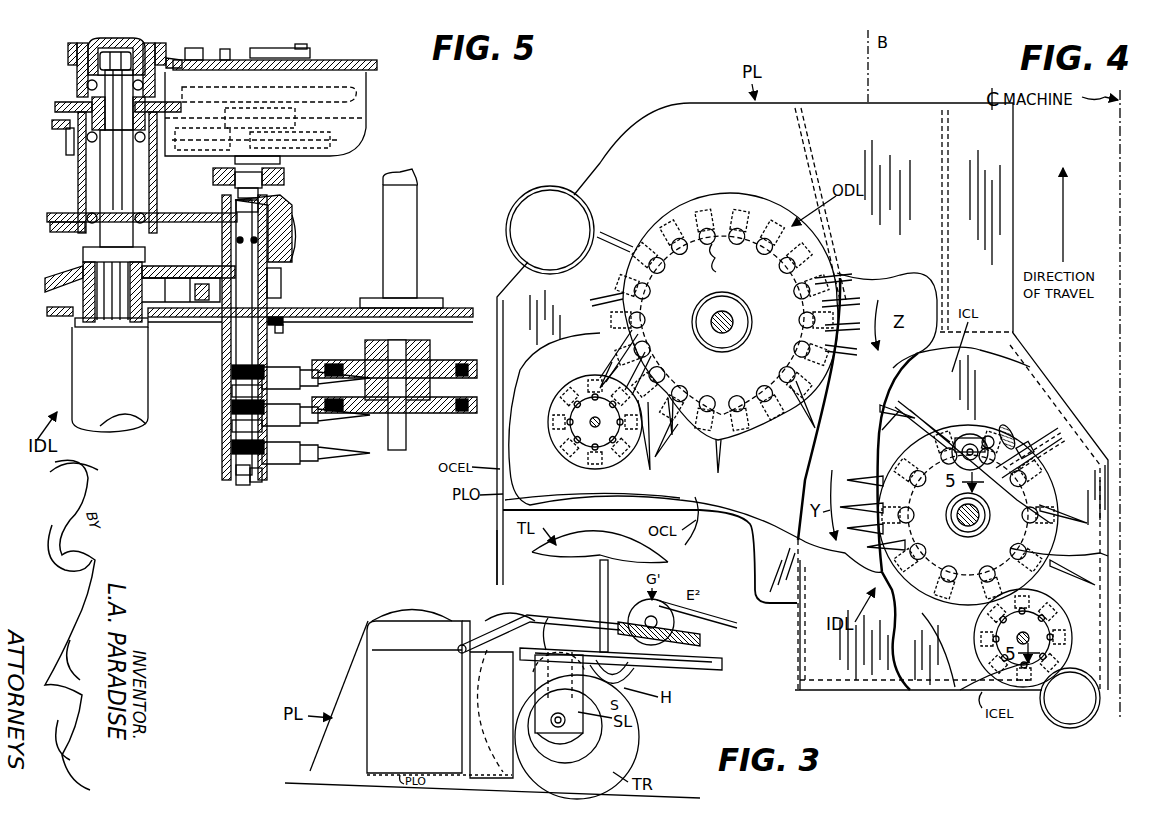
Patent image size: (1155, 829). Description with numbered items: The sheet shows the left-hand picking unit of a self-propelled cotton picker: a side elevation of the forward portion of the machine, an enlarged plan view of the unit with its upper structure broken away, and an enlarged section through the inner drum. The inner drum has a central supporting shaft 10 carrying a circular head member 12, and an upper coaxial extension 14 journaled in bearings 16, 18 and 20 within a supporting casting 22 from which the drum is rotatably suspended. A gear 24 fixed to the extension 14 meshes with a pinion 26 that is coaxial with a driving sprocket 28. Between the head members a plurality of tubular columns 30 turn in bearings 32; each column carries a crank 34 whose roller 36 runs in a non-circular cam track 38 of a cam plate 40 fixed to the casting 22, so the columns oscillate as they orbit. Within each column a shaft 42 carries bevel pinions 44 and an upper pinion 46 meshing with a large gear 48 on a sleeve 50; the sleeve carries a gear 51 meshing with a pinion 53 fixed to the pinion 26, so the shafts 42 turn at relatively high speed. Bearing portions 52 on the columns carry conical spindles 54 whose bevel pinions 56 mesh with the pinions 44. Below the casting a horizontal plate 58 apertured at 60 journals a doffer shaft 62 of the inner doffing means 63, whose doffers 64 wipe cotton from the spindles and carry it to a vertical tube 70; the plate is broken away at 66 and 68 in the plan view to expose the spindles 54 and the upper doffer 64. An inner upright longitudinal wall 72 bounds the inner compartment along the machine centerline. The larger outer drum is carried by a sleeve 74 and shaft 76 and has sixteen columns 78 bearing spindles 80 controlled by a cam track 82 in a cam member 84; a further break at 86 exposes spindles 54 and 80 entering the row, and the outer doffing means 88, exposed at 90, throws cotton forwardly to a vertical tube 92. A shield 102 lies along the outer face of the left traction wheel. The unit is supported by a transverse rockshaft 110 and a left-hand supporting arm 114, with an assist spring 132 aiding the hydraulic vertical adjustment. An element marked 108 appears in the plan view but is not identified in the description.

In FIG. 5, the central supporting shaft 10 is at (137, 397).
In FIG. 5, the circular head member 12 is at (62, 284).
In FIG. 5, the upper coaxial extension 14 is at (100, 181).
In FIG. 4, the upper coaxial extension 14 is at (958, 507).
In FIG. 5, the bearing 16 is at (87, 85).
In FIG. 5, the bearing 18 is at (66, 145).
In FIG. 5, the bearing 20 is at (72, 213).
In FIG. 5, the supporting housing or casting 22 is at (206, 62).
In FIG. 3, the supporting housing or casting 22 is at (412, 628).
In FIG. 5, the gear 24 is at (60, 104).
In FIG. 5, the pinion 26 is at (367, 119).
In FIG. 5, the driving sprocket 28 is at (350, 93).
In FIG. 5, the tubular columns 30 is at (222, 357).
In FIG. 4, the tubular columns 30 is at (962, 430).
In FIG. 5, the bearing 32 is at (278, 290).
In FIG. 5, the crank 34 is at (292, 217).
In FIG. 4, the crank 34 is at (975, 435).
In FIG. 5, the roller 36 is at (240, 185).
In FIG. 4, the roller 36 is at (990, 435).
In FIG. 5, the cam track 38 is at (284, 176).
In FIG. 4, the cam track 38 is at (1012, 430).
In FIG. 5, the cam member or plate 40 is at (213, 175).
In FIG. 4, the cam member or plate 40 is at (1026, 444).
In FIG. 5, the shaft 42 is at (238, 478).
In FIG. 5, the small bevel pinions 44 is at (230, 430).
In FIG. 5, the small pinion 46 is at (292, 238).
In FIG. 4, the small pinion 46 is at (1007, 424).
In FIG. 5, the large gear 48 is at (218, 235).
In FIG. 4, the large gear 48 is at (1036, 440).
In FIG. 5, the sleeve 50 is at (78, 162).
In FIG. 4, the sleeve 50 is at (988, 505).
In FIG. 5, the gear 51 is at (52, 125).
In FIG. 5, the bearing portions 52 is at (268, 370).
In FIG. 5, the pinion 53 is at (340, 146).
In FIG. 5, the picking spindle 54 is at (334, 462).
In FIG. 4, the picking spindle 54 is at (870, 478).
In FIG. 5, the small bevel pinion 56 is at (254, 478).
In FIG. 5, the horizontal plate 58 is at (335, 302).
In FIG. 4, the horizontal plate 58 is at (1020, 370).
In FIG. 5, the aperture 60 is at (276, 328).
In FIG. 5, the doffer shaft 62 is at (418, 178).
In FIG. 4, the doffer shaft 62 is at (1030, 638).
In FIG. 5, the inner doffing means 63 is at (428, 405).
In FIG. 4, the inner doffing means 63 is at (1065, 618).
In FIG. 5, the doffing members 64 is at (458, 370).
In FIG. 4, the doffing members 64 is at (975, 692).
In FIG. 4, the broken-away portion 66 is at (916, 356).
In FIG. 4, the broken-away portion 68 is at (934, 620).
In FIG. 4, the vertical tube 70 is at (1086, 726).
In FIG. 4, the inner upright longitudinal wall 72 is at (1108, 562).
In FIG. 4, the vertical sleeve 74 is at (700, 302).
In FIG. 4, the outer drum vertical shaft 76 is at (712, 322).
In FIG. 4, the outer drum columns 78 is at (718, 272).
In FIG. 4, the spindles 80 is at (676, 184).
In FIG. 4, the cam track 82 is at (726, 214).
In FIG. 4, the cam member 84 is at (707, 195).
In FIG. 4, the broken-out portion 86 is at (908, 280).
In FIG. 4, the outer doffing means 88 is at (596, 462).
In FIG. 4, the broken-away portion 90 is at (510, 445).
In FIG. 4, the vertical tube 92 is at (507, 214).
In FIG. 4, the upright shield 102 is at (503, 543).
In FIG. 4, the frame edge 108 is at (880, 124).
In FIG. 3, the transverse rockshaft 110 is at (540, 620).
In FIG. 3, the left-hand supporting arm 114 is at (502, 627).
In FIG. 3, the assist spring 132 is at (700, 638).